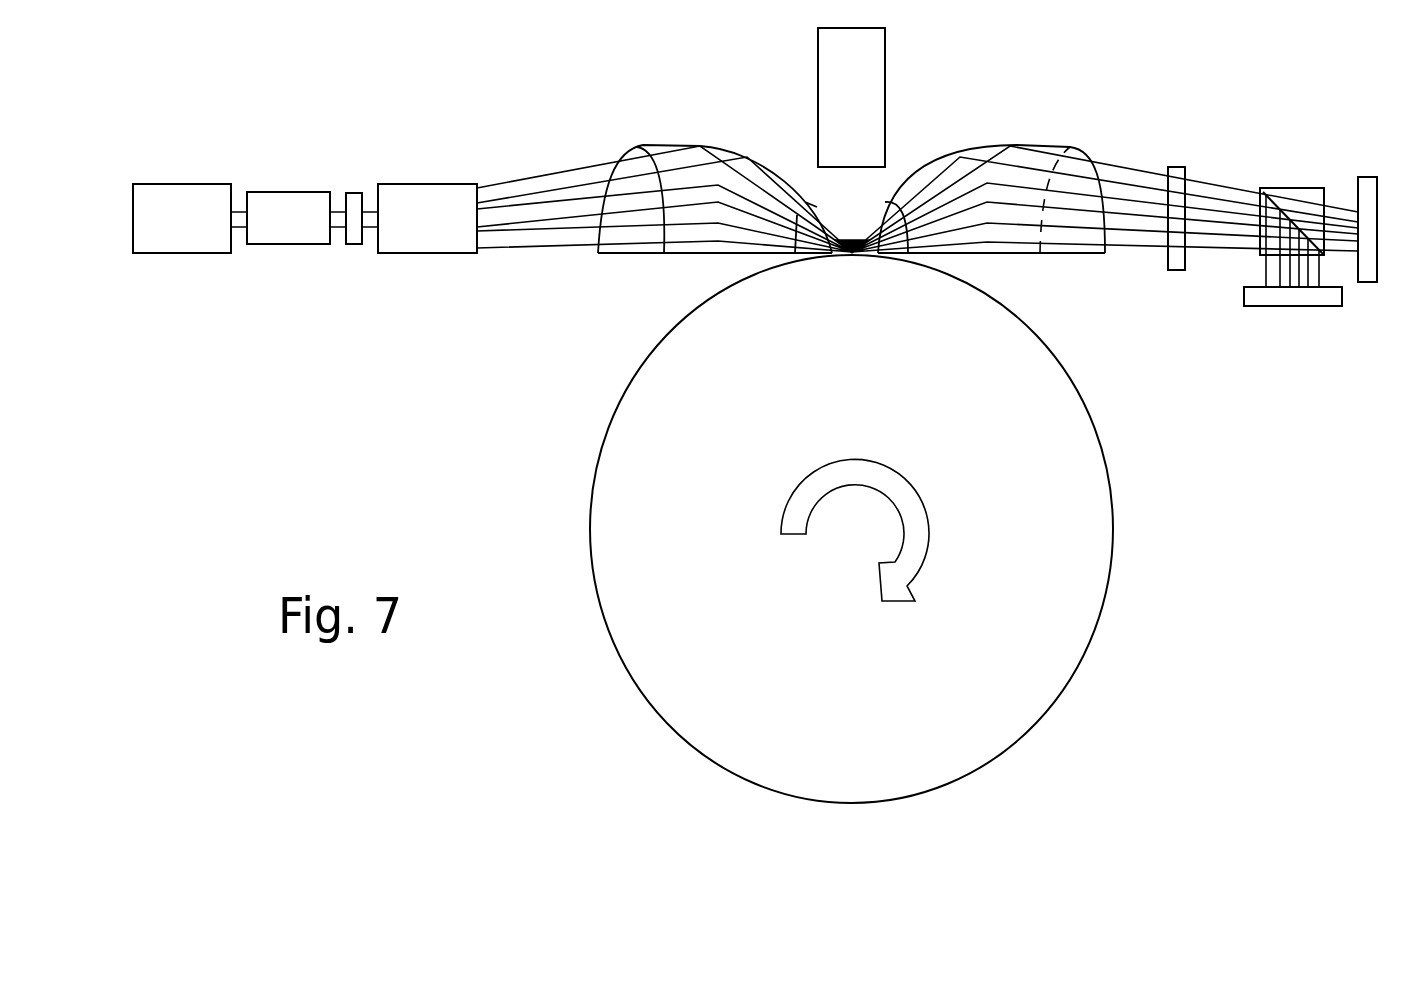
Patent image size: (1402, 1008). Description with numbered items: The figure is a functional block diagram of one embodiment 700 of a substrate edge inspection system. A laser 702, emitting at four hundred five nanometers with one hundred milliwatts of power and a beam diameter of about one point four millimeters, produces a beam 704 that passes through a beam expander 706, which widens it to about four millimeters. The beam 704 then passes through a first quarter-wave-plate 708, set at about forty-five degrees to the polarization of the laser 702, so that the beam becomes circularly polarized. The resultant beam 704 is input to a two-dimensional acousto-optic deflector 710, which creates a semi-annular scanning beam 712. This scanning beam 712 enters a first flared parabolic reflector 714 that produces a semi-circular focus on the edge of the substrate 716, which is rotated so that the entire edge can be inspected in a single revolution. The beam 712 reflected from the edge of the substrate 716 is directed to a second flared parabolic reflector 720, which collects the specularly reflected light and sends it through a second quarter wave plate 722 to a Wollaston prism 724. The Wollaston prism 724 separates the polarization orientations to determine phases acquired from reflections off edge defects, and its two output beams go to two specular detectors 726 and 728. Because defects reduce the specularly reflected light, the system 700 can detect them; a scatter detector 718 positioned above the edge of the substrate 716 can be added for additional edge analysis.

The inspection system embodiment 700 is at (312, 419).
The laser 702 is at (182, 218).
The beam 704 is at (237, 208).
The beam expander 706 is at (296, 218).
The first quarter-wave-plate 708 is at (354, 200).
The two-dimensional acousto-optic deflector 710 is at (427, 218).
The scanning beam 712 is at (562, 192).
The first flared parabolic reflector 714 is at (663, 145).
The substrate 716 is at (1078, 441).
The scatter detector 718 is at (851, 97).
The second flared parabolic reflector 720 is at (1027, 145).
The second quarter wave plate 722 is at (1178, 168).
The Wollaston prism 724 is at (1310, 193).
The specular detector 726 is at (1367, 183).
The specular detector 728 is at (1290, 306).